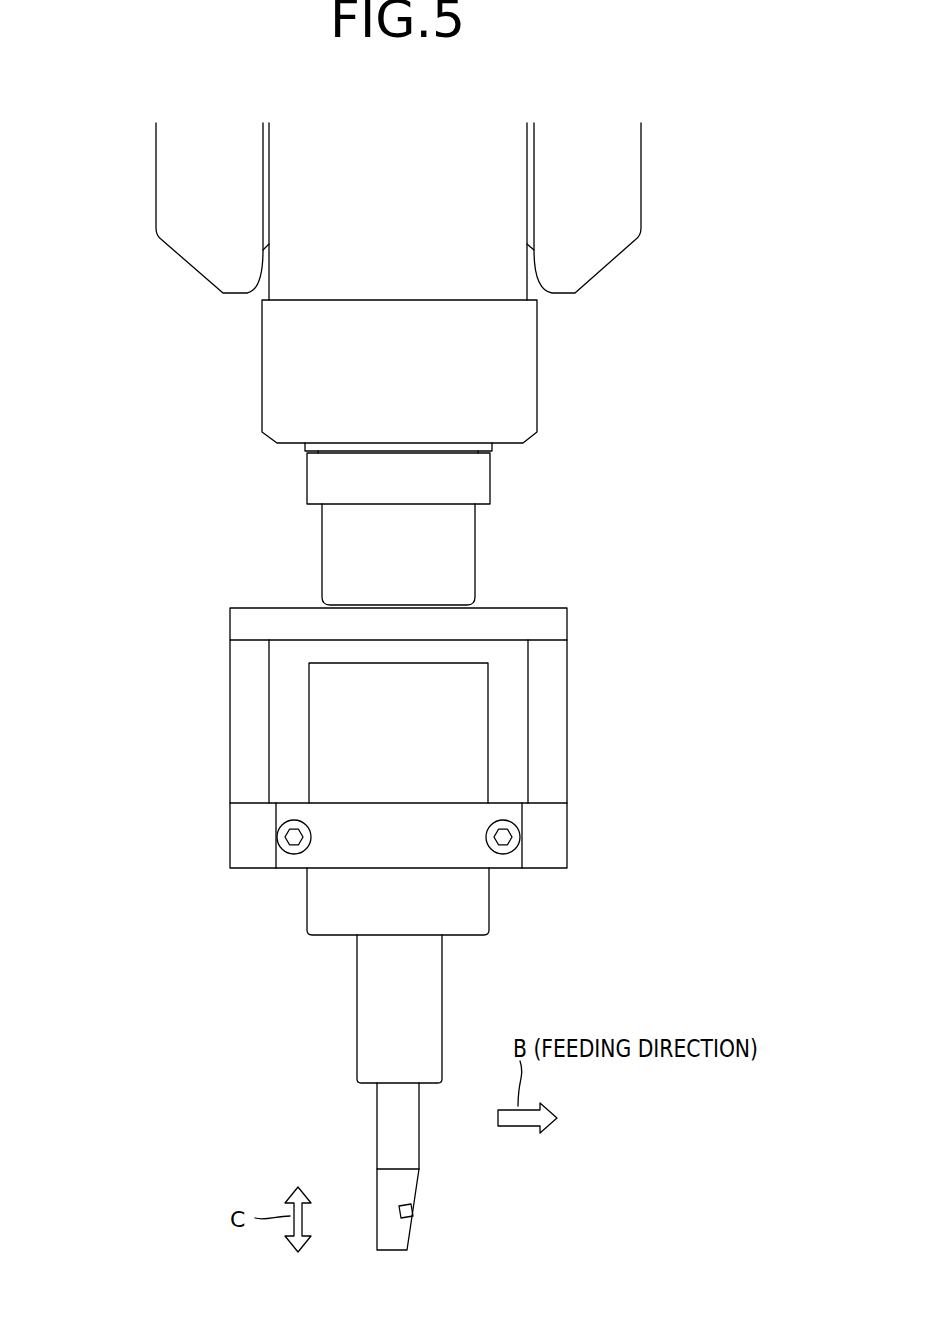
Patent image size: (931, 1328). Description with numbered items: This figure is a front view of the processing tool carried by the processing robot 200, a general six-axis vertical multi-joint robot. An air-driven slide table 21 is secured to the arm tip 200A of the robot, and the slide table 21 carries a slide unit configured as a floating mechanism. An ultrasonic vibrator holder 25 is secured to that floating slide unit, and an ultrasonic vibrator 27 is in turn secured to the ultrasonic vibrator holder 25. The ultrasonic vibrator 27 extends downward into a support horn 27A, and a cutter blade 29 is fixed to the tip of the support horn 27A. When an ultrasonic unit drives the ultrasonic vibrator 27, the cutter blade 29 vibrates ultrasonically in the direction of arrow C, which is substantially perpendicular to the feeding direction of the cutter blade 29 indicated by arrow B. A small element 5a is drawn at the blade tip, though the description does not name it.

The processing robot 200 is at (641, 217).
The arm tip 200A is at (537, 390).
The slide table 21 is at (475, 553).
The ultrasonic vibrator holder 25 is at (230, 730).
The ultrasonic vibrator 27 is at (357, 985).
The support horn 27A is at (377, 1119).
The cutter blade 29 is at (377, 1183).
The element piece 5a is at (413, 1215).